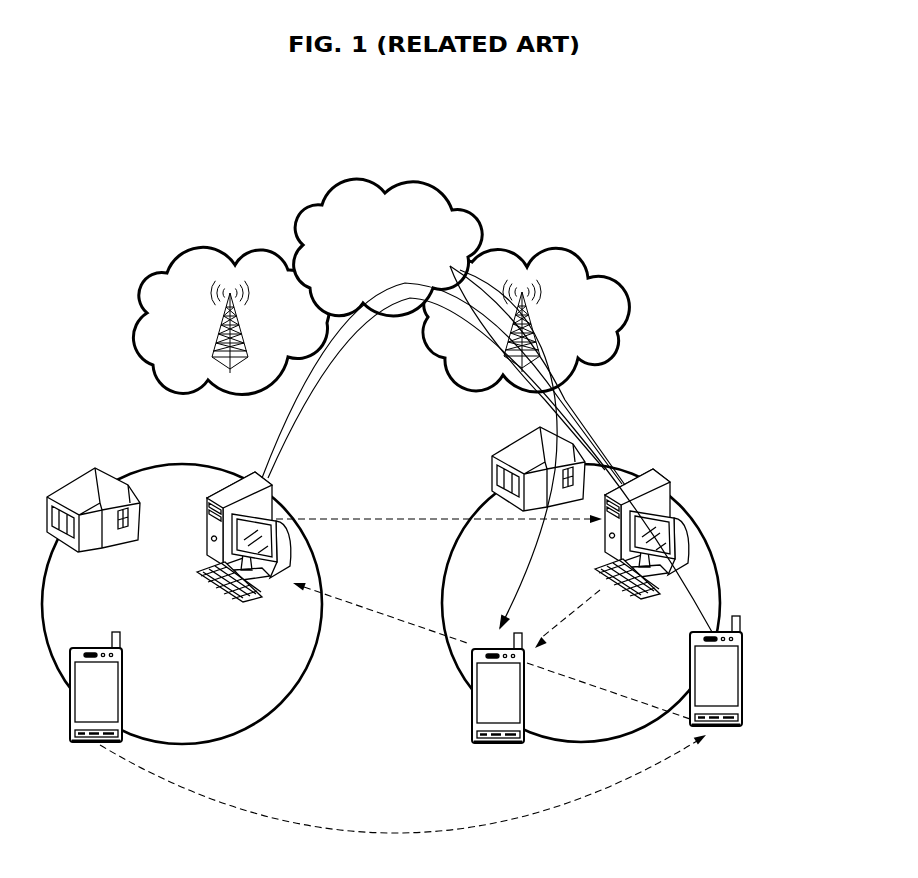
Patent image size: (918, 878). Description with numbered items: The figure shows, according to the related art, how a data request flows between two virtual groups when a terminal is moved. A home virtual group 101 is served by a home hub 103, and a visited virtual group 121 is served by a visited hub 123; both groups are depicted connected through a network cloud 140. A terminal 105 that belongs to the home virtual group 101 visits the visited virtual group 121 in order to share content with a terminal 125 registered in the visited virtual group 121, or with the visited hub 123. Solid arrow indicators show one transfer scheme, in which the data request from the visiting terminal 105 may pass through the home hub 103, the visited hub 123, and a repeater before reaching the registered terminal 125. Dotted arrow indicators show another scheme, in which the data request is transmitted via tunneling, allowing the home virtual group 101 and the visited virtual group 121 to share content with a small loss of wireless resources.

The home virtual group 101 is at (318, 567).
The home hub 103 is at (262, 480).
The terminal 105 is at (124, 665).
The visited virtual group 121 is at (688, 517).
The visited hub 123 is at (658, 478).
The terminal registered in the visited virtual group 125 is at (472, 708).
The Internet 140 is at (442, 183).